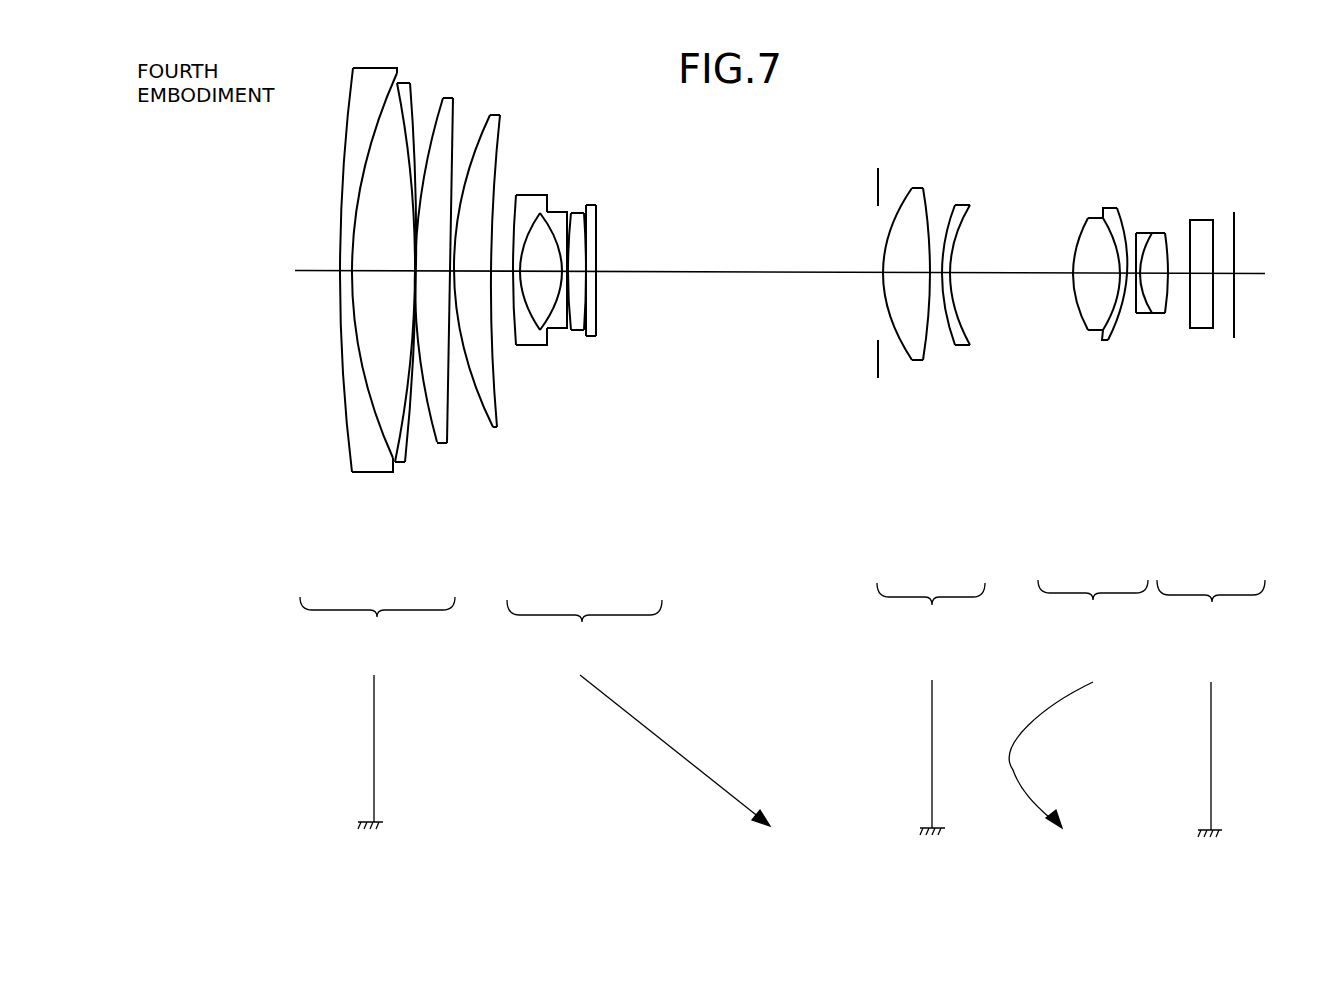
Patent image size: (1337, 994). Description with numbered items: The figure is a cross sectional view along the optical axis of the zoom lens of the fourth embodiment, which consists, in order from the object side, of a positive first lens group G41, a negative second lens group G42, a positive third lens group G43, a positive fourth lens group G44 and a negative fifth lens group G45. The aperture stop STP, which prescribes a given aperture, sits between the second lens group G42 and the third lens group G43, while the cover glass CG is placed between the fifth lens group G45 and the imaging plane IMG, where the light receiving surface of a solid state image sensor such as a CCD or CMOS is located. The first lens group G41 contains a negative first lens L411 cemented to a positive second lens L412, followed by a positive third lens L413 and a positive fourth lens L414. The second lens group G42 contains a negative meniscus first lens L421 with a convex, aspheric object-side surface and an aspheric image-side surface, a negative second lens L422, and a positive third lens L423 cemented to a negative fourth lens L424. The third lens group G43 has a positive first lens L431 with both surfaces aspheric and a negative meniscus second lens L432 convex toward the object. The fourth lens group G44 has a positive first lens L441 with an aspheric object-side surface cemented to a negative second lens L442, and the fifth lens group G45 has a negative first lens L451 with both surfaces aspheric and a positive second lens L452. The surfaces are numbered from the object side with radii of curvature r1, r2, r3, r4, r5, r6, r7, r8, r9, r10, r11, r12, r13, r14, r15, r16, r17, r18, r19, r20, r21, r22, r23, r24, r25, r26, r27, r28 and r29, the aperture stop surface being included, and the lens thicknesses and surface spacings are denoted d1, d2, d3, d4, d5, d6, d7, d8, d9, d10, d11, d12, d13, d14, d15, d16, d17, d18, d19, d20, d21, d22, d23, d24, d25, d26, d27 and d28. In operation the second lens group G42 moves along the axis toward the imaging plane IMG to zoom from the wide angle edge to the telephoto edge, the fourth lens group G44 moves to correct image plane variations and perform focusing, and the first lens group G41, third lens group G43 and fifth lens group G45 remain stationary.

The first lens group G41 is at (416, 441).
The second lens group G42 is at (635, 473).
The third lens group G43 is at (935, 486).
The fourth lens group G44 is at (1080, 491).
The fifth lens group G45 is at (1184, 464).
The first lens L411 is at (362, 470).
The second lens L412 is at (397, 463).
The third lens L413 is at (440, 445).
The fourth lens L414 is at (488, 428).
The first lens L421 is at (530, 346).
The second lens L422 is at (560, 330).
The third lens L423 is at (578, 332).
The fourth lens L424 is at (591, 337).
The first lens L431 is at (917, 362).
The second lens L432 is at (962, 347).
The first lens L441 is at (1096, 331).
The second lens L442 is at (1108, 341).
The first lens L451 is at (1143, 313).
The second lens L452 is at (1163, 313).
The aperture stop STP is at (878, 172).
The cover glass CG is at (1200, 228).
The imaging plane IMG is at (1235, 218).
The radius of curvature r1 is at (343, 147).
The radius of curvature r2 is at (387, 100).
The radius of curvature r3 is at (412, 103).
The radius of curvature r4 is at (436, 107).
The radius of curvature r5 is at (453, 137).
The radius of curvature r6 is at (487, 117).
The radius of curvature r7 is at (500, 124).
The radius of curvature r8 is at (514, 196).
The radius of curvature r9 is at (535, 215).
The radius of curvature r10 is at (563, 208).
The radius of curvature r11 is at (573, 208).
The radius of curvature r12 is at (580, 205).
The radius of curvature r13 is at (586, 220).
The radius of curvature r14 is at (596, 253).
The radius of curvature r15 is at (878, 196).
The radius of curvature r16 is at (890, 234).
The radius of curvature r17 is at (927, 208).
The radius of curvature r18 is at (947, 208).
The radius of curvature r19 is at (957, 238).
The radius of curvature r20 is at (1078, 238).
The radius of curvature r21 is at (1090, 218).
The radius of curvature r22 is at (1118, 207).
The radius of curvature r23 is at (1134, 240).
The radius of curvature r24 is at (1146, 235).
The radius of curvature r25 is at (1160, 233).
The radius of curvature r26 is at (1170, 233).
The radius of curvature r27 is at (1213, 255).
The radius of curvature r28 is at (1214, 256).
The radius of curvature r29 is at (1237, 255).
The surface distance d1 is at (347, 272).
The surface distance d2 is at (382, 273).
The surface distance d3 is at (415, 274).
The surface distance d4 is at (433, 274).
The surface distance d5 is at (455, 276).
The surface distance d6 is at (472, 275).
The surface distance d7 is at (500, 275).
The surface distance d8 is at (518, 275).
The surface distance d9 is at (544, 294).
The surface distance d10 is at (568, 275).
The surface distance d11 is at (580, 275).
The surface distance d12 is at (593, 275).
The surface distance d13 is at (597, 275).
The surface distance d14 is at (757, 275).
The surface distance d15 is at (883, 277).
The surface distance d16 is at (907, 276).
The surface distance d17 is at (937, 277).
The surface distance d18 is at (950, 278).
The surface distance d19 is at (1020, 278).
The surface distance d20 is at (1092, 277).
The surface distance d21 is at (1117, 282).
The surface distance d22 is at (1121, 277).
The surface distance d23 is at (1143, 278).
The surface distance d24 is at (1168, 277).
The surface distance d25 is at (1185, 278).
The surface distance d26 is at (1213, 292).
The surface distance d27 is at (1215, 285).
The surface distance d28 is at (1234, 283).